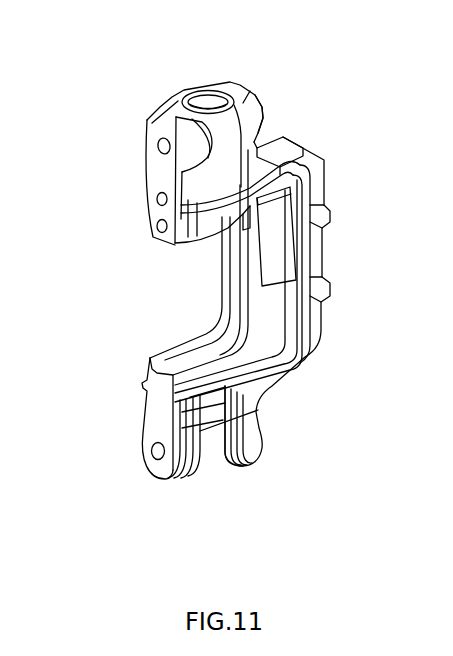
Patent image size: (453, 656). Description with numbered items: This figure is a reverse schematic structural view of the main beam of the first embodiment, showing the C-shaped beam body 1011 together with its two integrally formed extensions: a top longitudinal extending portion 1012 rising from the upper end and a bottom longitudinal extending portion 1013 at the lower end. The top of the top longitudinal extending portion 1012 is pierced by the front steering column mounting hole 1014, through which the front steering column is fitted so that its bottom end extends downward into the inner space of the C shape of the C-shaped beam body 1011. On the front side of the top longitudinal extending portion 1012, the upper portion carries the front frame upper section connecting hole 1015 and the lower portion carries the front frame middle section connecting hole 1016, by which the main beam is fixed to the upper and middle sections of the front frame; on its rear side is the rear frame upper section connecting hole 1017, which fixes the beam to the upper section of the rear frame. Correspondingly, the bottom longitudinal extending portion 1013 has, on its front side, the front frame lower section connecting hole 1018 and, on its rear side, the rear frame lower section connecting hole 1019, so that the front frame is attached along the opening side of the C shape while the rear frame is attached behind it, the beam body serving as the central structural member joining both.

The C-shaped beam body 1011 is at (268, 305).
The top longitudinal extending portion 1012 is at (226, 155).
The bottom longitudinal extending portion 1013 is at (242, 452).
The front steering column mounting hole 1014 is at (206, 104).
The front frame upper section connecting hole 1015 is at (158, 143).
The front frame middle section connecting hole 1016 is at (150, 226).
The rear frame upper section connecting hole 1017 is at (265, 123).
The front frame lower section connecting hole 1018 is at (155, 452).
The rear frame lower section connecting hole 1019 is at (262, 423).